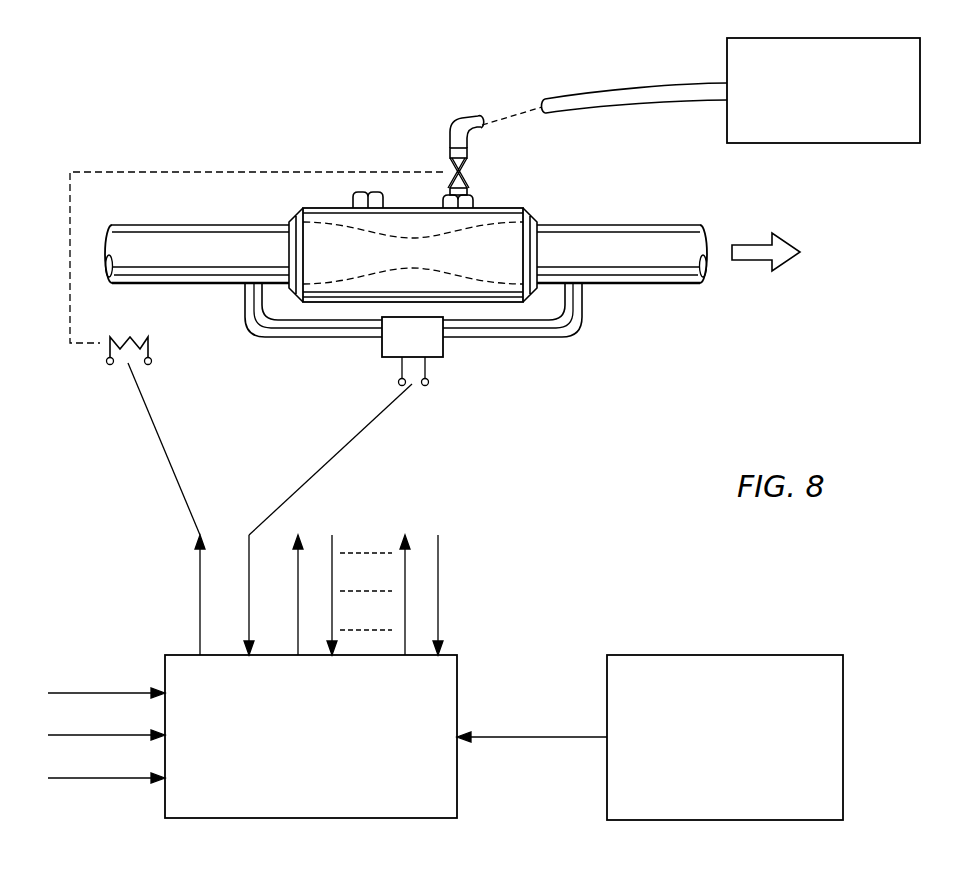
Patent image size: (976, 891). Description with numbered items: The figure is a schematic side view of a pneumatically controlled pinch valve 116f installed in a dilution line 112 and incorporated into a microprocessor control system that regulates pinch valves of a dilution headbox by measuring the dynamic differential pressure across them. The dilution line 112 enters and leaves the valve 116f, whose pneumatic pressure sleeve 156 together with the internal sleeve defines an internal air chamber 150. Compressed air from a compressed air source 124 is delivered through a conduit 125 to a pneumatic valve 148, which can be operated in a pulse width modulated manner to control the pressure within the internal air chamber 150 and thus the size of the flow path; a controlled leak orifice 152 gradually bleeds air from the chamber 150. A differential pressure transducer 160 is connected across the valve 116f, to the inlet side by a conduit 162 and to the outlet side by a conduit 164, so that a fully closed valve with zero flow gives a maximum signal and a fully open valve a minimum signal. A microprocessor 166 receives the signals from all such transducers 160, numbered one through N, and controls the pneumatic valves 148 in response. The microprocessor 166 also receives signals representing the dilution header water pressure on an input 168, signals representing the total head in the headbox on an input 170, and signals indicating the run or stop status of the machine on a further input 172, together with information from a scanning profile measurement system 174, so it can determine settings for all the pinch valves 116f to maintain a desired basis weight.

The dilution line 112 is at (178, 224).
The pneumatically controlled pinch valve 116f is at (550, 203).
The compressed air source 124 is at (780, 144).
The conduit 125 is at (552, 102).
The pneumatic valve 148 is at (424, 160).
The internal air chamber 150 is at (458, 272).
The controlled leak orifice 152 is at (366, 191).
The pneumatic pressure sleeve 156 is at (296, 217).
The differential pressure transducer 160 is at (381, 358).
The conduit 162 is at (252, 338).
The conduit 164 is at (562, 341).
The microprocessor 166 is at (350, 819).
The input 168 is at (113, 692).
The input 170 is at (119, 734).
The input signal line 172 is at (108, 779).
The scanning profile measurement system 174 is at (677, 654).